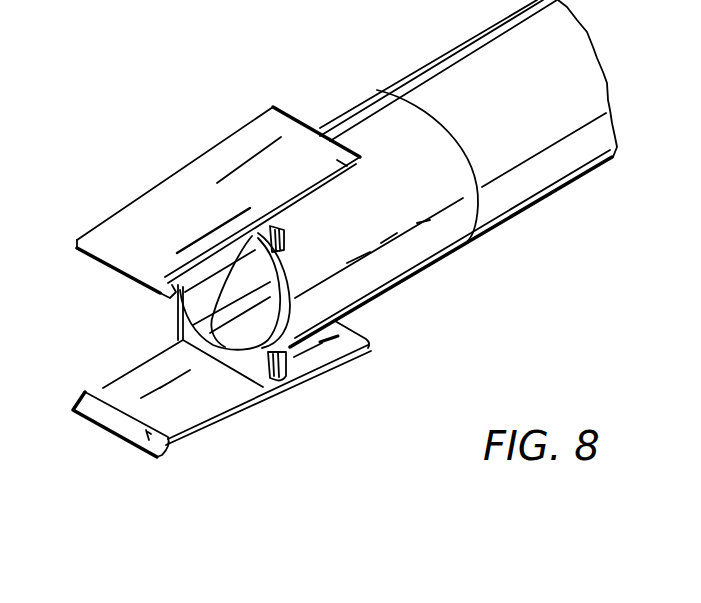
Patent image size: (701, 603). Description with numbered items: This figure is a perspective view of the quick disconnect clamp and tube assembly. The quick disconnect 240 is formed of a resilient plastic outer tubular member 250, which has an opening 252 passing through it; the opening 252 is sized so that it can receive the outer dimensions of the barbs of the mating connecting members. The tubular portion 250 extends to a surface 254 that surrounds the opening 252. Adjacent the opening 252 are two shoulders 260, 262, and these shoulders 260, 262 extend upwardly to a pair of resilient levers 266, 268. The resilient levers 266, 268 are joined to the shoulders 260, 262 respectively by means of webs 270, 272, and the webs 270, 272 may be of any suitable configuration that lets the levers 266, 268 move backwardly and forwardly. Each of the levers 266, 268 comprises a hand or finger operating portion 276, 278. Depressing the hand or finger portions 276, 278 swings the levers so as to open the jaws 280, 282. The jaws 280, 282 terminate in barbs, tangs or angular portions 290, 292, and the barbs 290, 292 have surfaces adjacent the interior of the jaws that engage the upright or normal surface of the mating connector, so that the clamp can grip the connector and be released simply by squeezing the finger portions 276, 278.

The quick disconnect 240 is at (420, 296).
The outer tubular member 250 is at (443, 150).
The opening 252 is at (237, 362).
The surface 254 is at (322, 362).
The shoulder 260 is at (250, 213).
The shoulder 262 is at (243, 302).
The resilient lever 266 is at (160, 203).
The resilient lever 268 is at (194, 438).
The web 270 is at (279, 222).
The web 272 is at (285, 378).
The hand or finger operating portion 276 is at (345, 165).
The hand or finger operating portion 278 is at (370, 346).
The jaw 280 is at (177, 313).
The jaw 282 is at (108, 392).
The barb 290 is at (157, 298).
The barb 292 is at (167, 458).